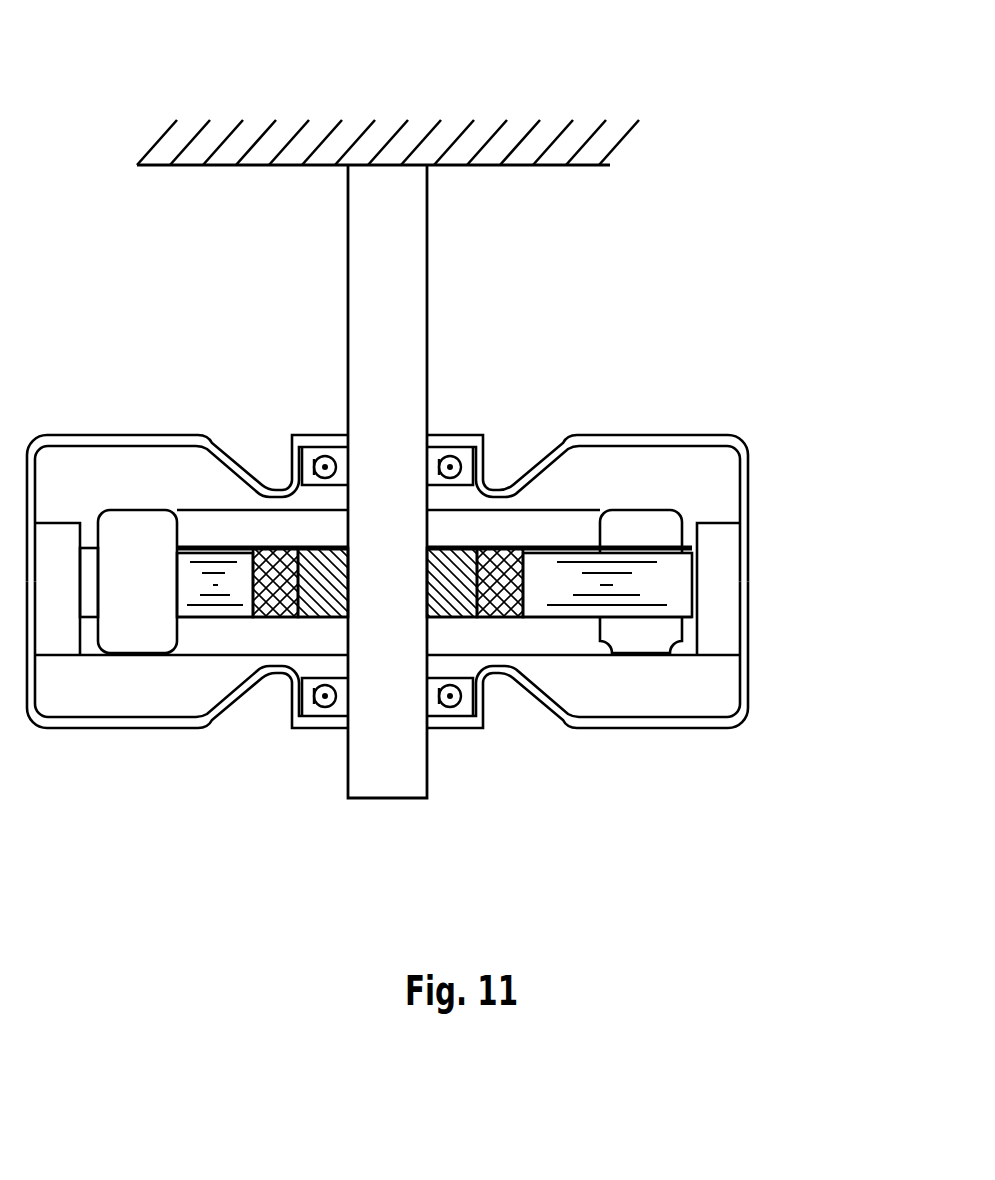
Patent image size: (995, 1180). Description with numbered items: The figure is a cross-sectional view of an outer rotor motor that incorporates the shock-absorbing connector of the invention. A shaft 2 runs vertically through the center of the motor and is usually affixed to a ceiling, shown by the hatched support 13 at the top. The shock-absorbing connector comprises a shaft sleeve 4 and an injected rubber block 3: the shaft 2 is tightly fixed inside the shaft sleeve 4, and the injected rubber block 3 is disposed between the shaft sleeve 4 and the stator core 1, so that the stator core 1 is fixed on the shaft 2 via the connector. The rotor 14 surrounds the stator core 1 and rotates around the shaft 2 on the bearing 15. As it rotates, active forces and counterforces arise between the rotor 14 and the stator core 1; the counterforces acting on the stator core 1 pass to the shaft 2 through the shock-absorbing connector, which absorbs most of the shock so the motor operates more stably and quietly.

The stator core 1 is at (566, 582).
The shaft 2 is at (388, 370).
The injected rubber block 3 is at (519, 600).
The shaft sleeve 4 is at (303, 553).
The fixed base 13 is at (305, 147).
The rotor 14 is at (724, 585).
The bearing 15 is at (318, 703).